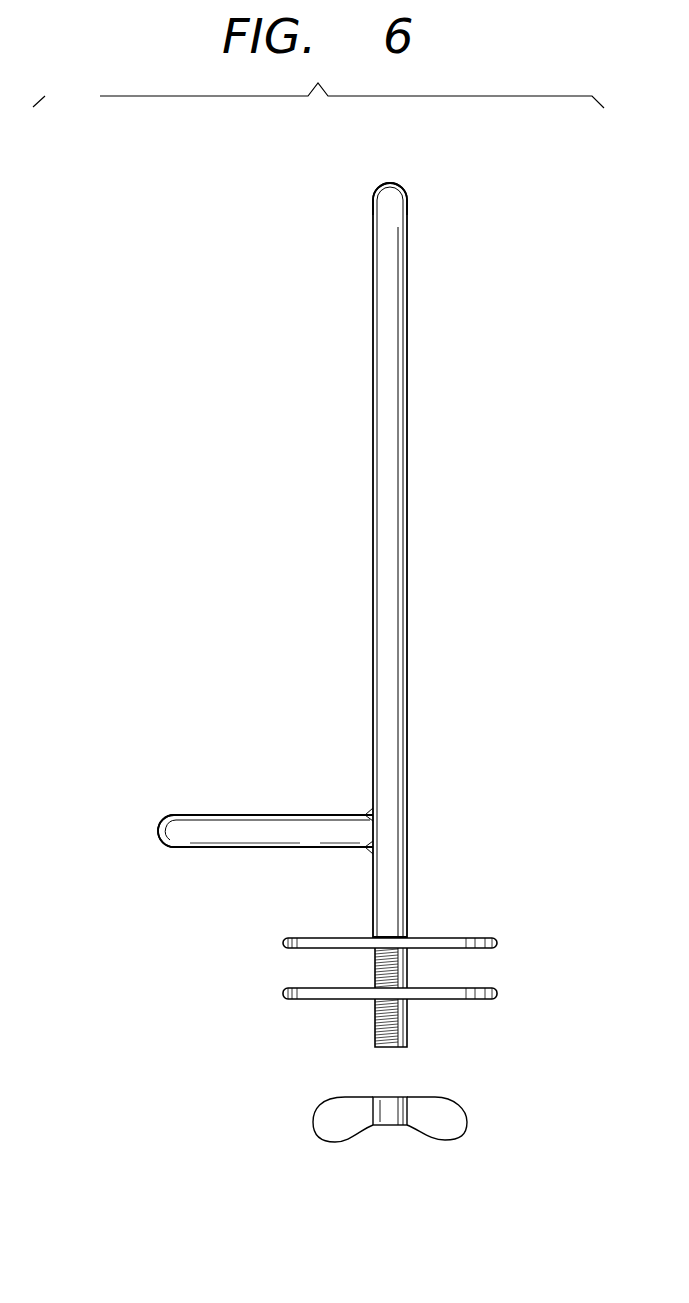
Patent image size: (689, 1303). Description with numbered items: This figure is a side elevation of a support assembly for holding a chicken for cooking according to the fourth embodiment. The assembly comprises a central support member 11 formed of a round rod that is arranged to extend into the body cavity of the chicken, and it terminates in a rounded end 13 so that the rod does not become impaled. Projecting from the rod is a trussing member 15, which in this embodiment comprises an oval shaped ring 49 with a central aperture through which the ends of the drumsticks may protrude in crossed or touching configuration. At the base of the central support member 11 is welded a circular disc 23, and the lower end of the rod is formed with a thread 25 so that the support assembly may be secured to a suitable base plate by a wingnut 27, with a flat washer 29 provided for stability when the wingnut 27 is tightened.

The central support member 11 is at (408, 475).
The rounded end 13 is at (405, 190).
The trussing member 15 is at (190, 745).
The oval shaped ring 49 is at (213, 813).
The circular disc 23 is at (497, 940).
The flat washer 29 is at (497, 994).
The thread 25 is at (407, 1023).
The wingnut 27 is at (460, 1140).